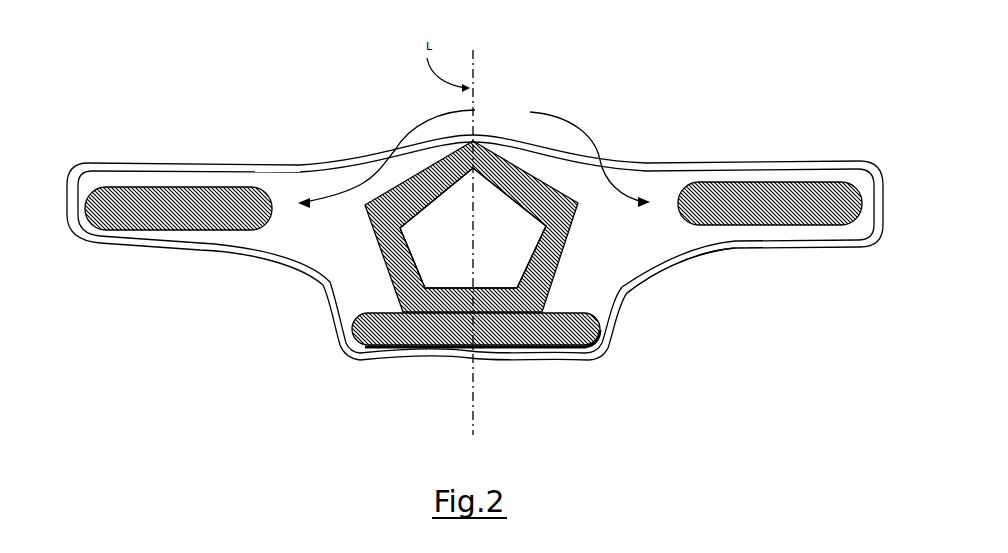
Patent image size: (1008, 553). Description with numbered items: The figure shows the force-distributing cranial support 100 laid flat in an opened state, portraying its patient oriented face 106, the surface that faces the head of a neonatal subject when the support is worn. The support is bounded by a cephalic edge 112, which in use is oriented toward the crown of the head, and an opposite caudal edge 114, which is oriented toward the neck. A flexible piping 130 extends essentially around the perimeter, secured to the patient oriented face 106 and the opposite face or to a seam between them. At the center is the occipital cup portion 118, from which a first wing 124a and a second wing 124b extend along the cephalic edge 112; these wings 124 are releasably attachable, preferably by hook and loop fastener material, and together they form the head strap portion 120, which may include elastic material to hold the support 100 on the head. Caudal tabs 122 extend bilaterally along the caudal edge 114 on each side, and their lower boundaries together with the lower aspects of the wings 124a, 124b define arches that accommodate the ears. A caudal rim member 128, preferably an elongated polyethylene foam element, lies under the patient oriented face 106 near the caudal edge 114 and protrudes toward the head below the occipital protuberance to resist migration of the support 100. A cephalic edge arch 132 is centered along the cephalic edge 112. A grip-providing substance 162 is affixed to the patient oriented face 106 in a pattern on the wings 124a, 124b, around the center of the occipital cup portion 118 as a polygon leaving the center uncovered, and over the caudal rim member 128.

The force-distributing cranial support 100 is at (190, 134).
The patient oriented face 106 is at (350, 243).
The cephalic edge 112 is at (237, 166).
The caudal edge 114 is at (424, 360).
The occipital cup portion 118 is at (510, 250).
The head strap portion 120 is at (474, 156).
The caudal tabs 122 is at (584, 354).
The wings 124 is at (624, 299).
The first wing 124a is at (137, 186).
The second wing 124b is at (808, 181).
The caudal rim member 128 is at (366, 330).
The flexible piping 130 is at (95, 242).
The cephalic edge arch 132 is at (488, 349).
The grip-providing substance 162 is at (230, 219).